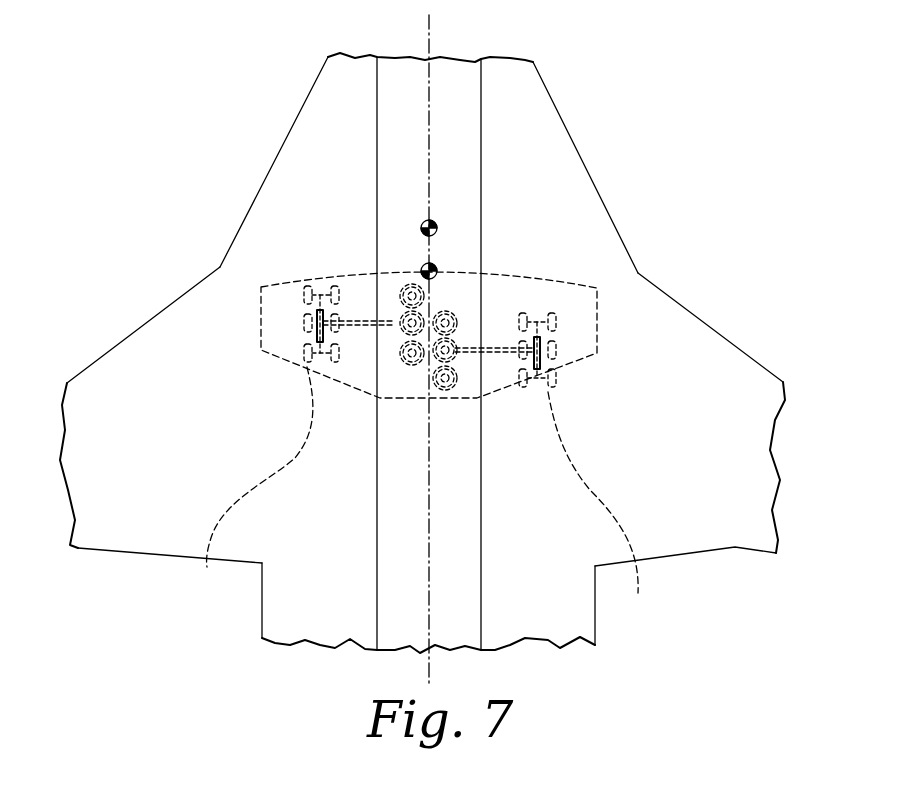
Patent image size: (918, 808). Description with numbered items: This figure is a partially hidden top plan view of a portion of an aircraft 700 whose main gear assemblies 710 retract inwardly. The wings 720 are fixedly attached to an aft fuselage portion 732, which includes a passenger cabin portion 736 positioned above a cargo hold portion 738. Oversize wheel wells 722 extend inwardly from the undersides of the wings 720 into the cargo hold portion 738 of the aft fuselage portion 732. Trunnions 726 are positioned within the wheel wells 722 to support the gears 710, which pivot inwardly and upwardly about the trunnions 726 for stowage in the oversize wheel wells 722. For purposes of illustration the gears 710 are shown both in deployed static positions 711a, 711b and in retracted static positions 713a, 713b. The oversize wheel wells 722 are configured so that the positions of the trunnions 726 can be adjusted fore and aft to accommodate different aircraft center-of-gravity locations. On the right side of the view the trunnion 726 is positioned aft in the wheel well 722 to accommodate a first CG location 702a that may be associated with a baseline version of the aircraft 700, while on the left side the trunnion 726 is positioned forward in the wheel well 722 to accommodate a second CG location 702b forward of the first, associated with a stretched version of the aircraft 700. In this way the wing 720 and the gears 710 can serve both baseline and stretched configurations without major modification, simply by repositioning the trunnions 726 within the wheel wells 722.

The aircraft 700 is at (553, 102).
The first CG location 702a is at (437, 268).
The second CG location 702b is at (423, 224).
The main gear assemblies 710 is at (265, 327).
The deployed static position 711a is at (609, 509).
The deployed static position 711b is at (249, 484).
The retracted static position 713a is at (453, 397).
The retracted static position 713b is at (413, 367).
The wings 720 is at (117, 343).
The oversize wheel wells 722 is at (345, 282).
The trunnions 726 is at (303, 330).
The aft fuselage portion 732 is at (377, 231).
The passenger cabin portion 736 is at (462, 203).
The cargo hold portion 738 is at (463, 235).